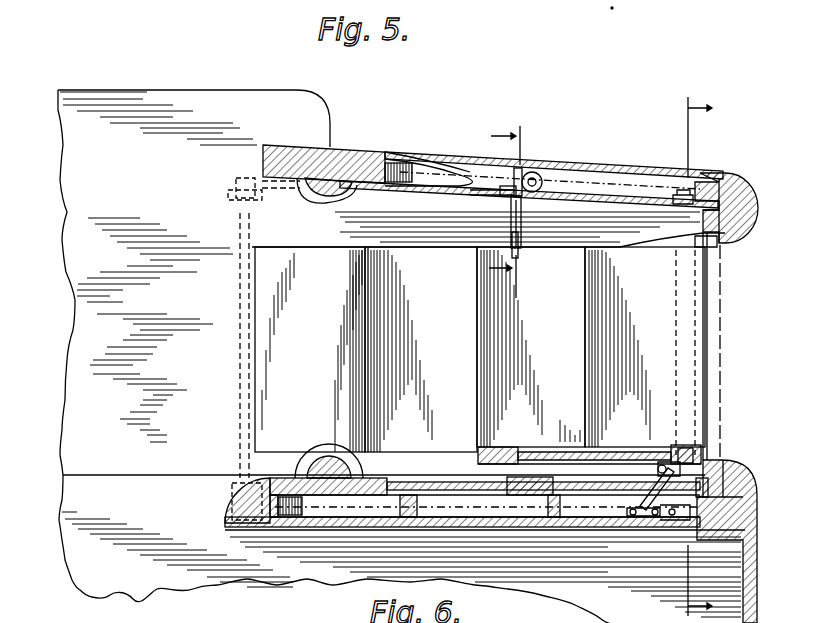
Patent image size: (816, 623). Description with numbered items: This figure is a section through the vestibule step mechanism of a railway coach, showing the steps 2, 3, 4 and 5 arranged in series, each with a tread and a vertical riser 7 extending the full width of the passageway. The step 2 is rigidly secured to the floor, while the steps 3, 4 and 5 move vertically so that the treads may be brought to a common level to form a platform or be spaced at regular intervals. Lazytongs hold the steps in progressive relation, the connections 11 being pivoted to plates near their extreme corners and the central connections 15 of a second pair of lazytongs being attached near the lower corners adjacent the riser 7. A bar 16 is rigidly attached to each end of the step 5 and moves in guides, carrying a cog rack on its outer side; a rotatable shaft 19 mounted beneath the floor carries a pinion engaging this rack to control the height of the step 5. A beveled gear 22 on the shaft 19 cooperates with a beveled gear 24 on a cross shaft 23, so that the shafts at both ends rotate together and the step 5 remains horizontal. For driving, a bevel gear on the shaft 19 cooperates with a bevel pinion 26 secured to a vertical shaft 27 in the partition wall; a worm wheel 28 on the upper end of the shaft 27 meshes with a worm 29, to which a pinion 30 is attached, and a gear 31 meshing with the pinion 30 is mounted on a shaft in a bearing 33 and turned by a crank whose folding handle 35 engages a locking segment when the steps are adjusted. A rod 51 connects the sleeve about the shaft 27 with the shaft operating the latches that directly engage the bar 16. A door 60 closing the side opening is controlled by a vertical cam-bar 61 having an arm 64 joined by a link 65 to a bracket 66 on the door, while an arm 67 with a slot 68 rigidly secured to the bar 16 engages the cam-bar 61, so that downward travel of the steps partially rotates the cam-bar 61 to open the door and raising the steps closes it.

The step 2 is at (310, 349).
The step 3 is at (421, 349).
The step 4 is at (531, 347).
The step 5 is at (652, 346).
The riser 7 is at (696, 348).
The lazytongs connections 11 is at (512, 204).
The central connections 15 is at (678, 194).
The bar 16 is at (705, 174).
The rotatable shaft 19 is at (418, 162).
The beveled gear 22 is at (268, 192).
The shaft 23 is at (239, 304).
The beveled gear 24 is at (246, 184).
The bevel pinion 26 is at (488, 234).
The vertical shaft 27 is at (552, 174).
The worm wheel 28 is at (536, 173).
The worm 29 is at (516, 184).
The pinion 30 is at (506, 198).
The gear 31 is at (512, 193).
The bearing 33 is at (511, 230).
The handle 35 is at (520, 248).
The rod 51 is at (400, 158).
The door 60 is at (507, 450).
The cam-bar 61 is at (690, 470).
The arm 64 is at (633, 514).
The link 65 is at (642, 500).
The bracket 66 is at (663, 464).
The arm 67 is at (678, 522).
The slot 68 is at (660, 518).